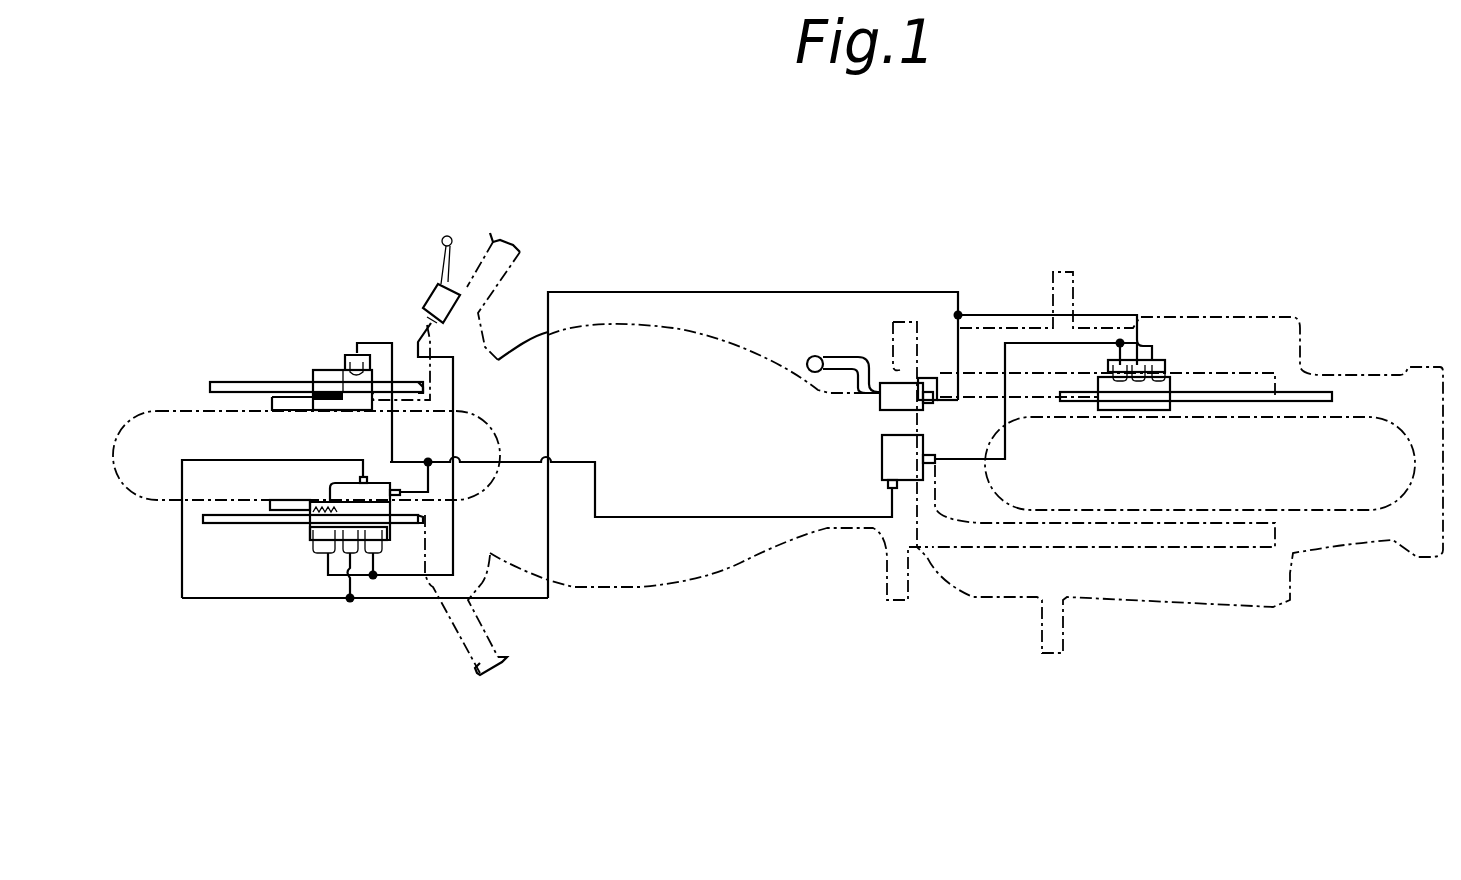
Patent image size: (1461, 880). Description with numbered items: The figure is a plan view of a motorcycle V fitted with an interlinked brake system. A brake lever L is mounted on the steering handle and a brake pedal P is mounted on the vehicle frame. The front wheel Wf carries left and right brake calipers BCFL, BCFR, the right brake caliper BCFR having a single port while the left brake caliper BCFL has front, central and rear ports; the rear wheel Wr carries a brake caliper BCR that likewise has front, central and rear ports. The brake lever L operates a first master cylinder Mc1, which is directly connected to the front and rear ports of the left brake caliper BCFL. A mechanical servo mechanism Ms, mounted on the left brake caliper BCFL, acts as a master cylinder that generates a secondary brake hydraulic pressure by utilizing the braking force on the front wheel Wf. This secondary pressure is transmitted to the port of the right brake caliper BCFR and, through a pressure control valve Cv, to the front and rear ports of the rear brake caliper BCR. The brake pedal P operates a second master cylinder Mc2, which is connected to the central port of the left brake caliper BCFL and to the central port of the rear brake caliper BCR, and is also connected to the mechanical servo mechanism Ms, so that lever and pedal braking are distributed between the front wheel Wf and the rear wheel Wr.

The motorcycle V is at (835, 266).
The front wheel Wf is at (122, 430).
The rear wheel Wr is at (1353, 412).
The brake lever L is at (444, 257).
The first master cylinder Mc1 is at (437, 297).
The second master cylinder Mc2 is at (897, 410).
The right brake caliper BCFR is at (327, 370).
The left brake caliper BCFL is at (313, 552).
The brake caliper BCR is at (1133, 405).
The mechanical servo mechanism Ms is at (335, 484).
The brake pedal P is at (818, 356).
The pressure control valve Cv is at (893, 463).